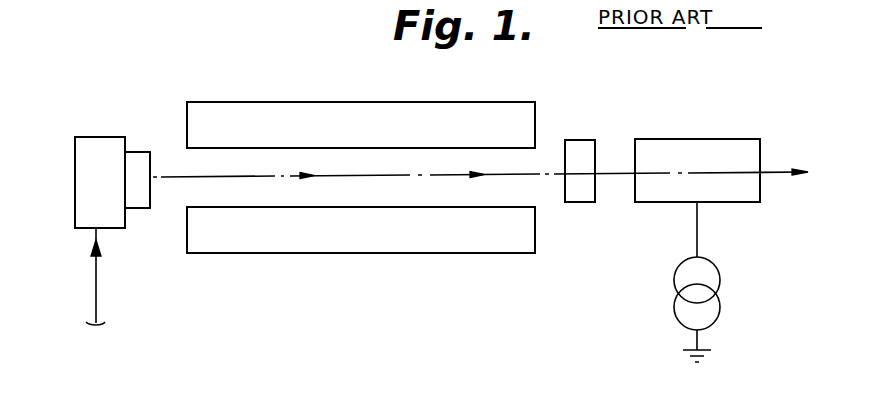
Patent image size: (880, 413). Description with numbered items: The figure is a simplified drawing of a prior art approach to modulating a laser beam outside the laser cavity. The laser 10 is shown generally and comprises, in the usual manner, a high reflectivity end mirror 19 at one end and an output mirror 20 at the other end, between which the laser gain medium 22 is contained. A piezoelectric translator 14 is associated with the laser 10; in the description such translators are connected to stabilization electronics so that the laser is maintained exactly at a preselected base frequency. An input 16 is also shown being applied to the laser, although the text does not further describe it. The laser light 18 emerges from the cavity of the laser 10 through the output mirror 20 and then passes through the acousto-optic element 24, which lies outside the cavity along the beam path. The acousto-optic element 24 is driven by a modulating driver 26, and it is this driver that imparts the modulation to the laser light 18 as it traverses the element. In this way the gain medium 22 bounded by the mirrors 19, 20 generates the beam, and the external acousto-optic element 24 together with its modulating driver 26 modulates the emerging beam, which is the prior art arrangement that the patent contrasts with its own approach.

The laser 10 is at (132, 126).
The piezoelectric translator 14 is at (85, 162).
The input signal 16 is at (96, 293).
The laser light 18 is at (406, 178).
The high reflectivity end mirror 19 is at (148, 160).
The output mirror 20 is at (582, 192).
The laser gain medium 22 is at (367, 167).
The acousto-optic element 24 is at (731, 148).
The modulating driver 26 is at (730, 290).